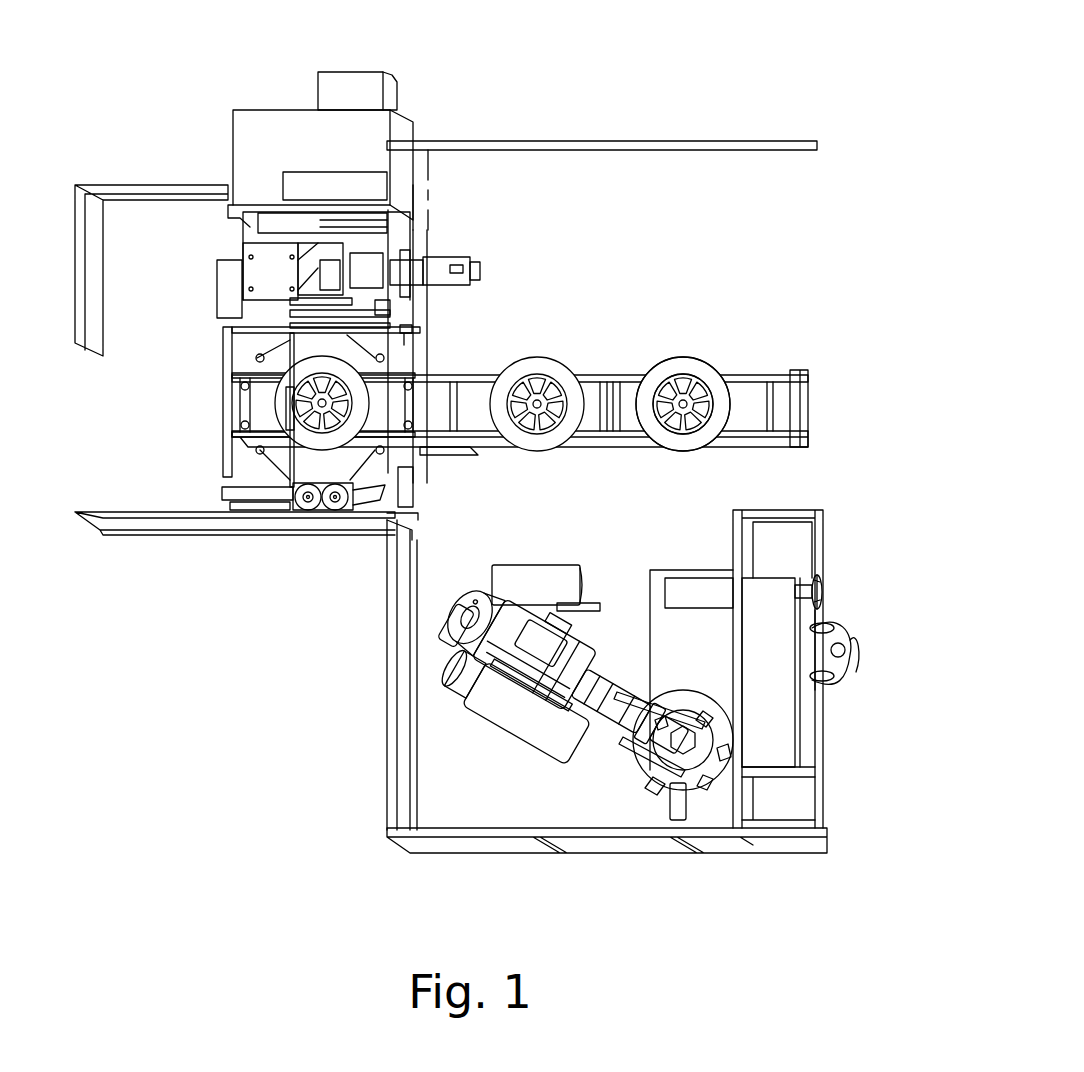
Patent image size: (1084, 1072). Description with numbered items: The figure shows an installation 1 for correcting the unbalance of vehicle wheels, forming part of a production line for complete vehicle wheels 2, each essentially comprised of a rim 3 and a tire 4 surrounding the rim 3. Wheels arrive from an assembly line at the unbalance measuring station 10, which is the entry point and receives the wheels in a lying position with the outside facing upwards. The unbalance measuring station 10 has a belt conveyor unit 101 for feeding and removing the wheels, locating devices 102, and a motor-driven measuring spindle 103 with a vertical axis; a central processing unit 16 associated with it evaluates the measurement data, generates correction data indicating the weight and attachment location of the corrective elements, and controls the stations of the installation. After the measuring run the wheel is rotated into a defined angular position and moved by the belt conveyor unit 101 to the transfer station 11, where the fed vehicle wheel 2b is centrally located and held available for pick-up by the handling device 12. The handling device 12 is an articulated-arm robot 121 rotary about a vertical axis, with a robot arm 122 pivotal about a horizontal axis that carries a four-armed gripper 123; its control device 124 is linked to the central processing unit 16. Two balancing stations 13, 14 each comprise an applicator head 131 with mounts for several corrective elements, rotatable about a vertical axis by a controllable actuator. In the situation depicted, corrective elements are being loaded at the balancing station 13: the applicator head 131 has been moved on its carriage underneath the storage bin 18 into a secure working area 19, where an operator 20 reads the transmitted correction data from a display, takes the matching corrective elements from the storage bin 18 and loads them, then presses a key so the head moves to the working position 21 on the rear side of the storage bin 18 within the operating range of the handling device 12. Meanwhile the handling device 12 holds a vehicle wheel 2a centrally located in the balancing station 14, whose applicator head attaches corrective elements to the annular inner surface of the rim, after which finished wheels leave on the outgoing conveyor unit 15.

The installation 1 is at (666, 62).
The central processing unit 16 is at (257, 108).
The unbalance measuring station 10 is at (437, 345).
The transfer station 11 is at (480, 462).
The outgoing conveyor unit 15 is at (775, 367).
The vehicle wheel 2 is at (280, 420).
The vehicle wheel 2a is at (685, 700).
The vehicle wheel 2b is at (543, 360).
The rim 3 is at (693, 380).
The tire 4 is at (663, 365).
The belt conveyor unit 101 is at (270, 380).
The locating devices 102 is at (258, 340).
The measuring spindle 103 is at (305, 512).
The handling device 12 is at (565, 659).
The articulated-arm robot 121 is at (500, 703).
The robot arm 122 is at (603, 693).
The four-armed gripper 123 is at (640, 773).
The control device 124 is at (535, 580).
The balancing station 13 is at (710, 560).
The applicator head 131 is at (825, 580).
The balancing station 14 is at (648, 800).
The storage bin 18 is at (777, 740).
The secure working area 19 is at (837, 697).
The operator 20 is at (853, 647).
The working position 21 is at (673, 580).